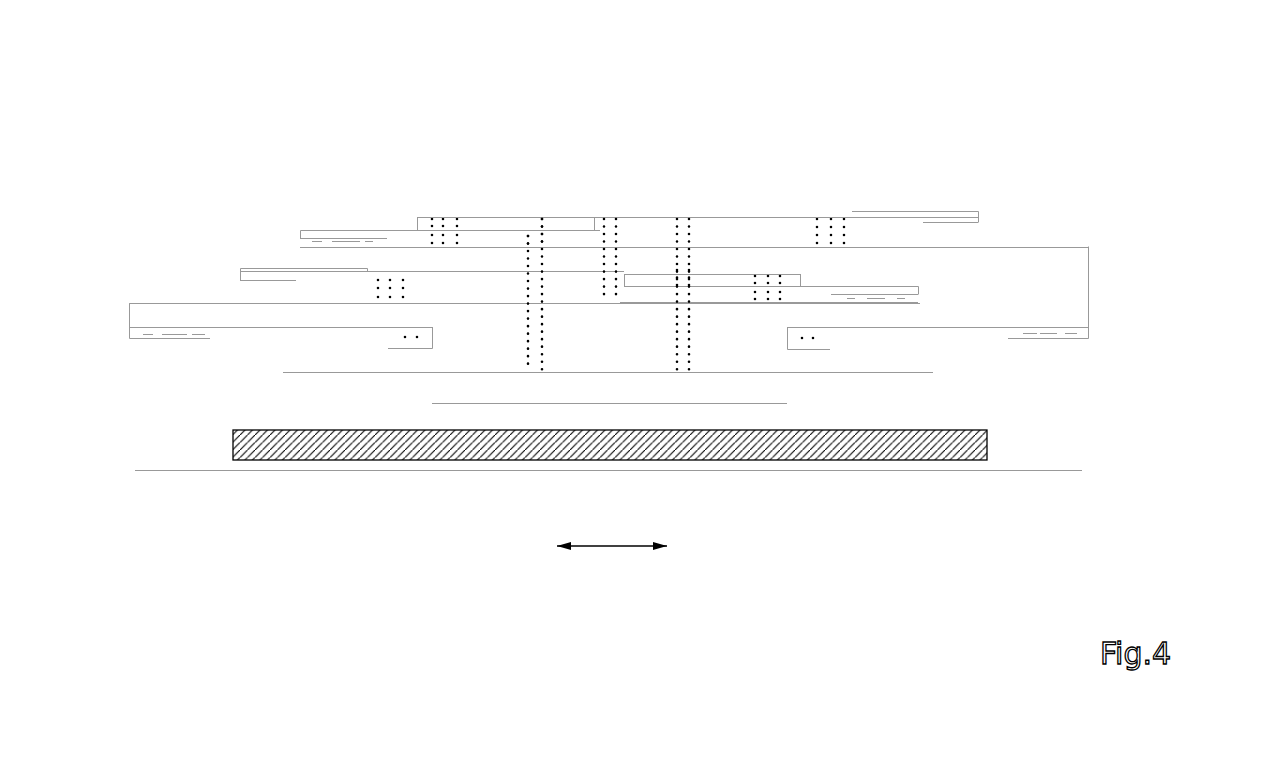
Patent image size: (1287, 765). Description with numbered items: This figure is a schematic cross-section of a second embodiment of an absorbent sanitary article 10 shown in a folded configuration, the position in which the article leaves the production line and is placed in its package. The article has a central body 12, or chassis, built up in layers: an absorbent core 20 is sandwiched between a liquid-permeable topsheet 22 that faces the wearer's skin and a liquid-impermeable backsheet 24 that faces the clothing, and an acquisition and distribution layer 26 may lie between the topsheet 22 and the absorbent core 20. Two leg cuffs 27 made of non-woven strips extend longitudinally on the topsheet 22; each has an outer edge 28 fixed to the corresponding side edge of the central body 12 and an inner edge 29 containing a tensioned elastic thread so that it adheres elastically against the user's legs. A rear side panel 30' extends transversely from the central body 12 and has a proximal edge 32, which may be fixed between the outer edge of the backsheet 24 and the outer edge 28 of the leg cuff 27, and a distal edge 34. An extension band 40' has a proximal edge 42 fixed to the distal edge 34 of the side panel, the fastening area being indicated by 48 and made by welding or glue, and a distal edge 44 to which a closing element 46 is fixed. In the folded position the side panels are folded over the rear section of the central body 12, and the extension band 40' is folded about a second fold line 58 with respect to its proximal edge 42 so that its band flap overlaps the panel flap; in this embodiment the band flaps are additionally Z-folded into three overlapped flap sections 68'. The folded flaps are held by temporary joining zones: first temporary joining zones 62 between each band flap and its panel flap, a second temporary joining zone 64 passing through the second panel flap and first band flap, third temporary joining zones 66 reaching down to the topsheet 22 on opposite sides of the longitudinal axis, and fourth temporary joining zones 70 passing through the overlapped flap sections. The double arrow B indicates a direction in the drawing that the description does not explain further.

The absorbent sanitary article 10 is at (915, 107).
The central body 12 is at (1103, 373).
The absorbent core 20 is at (795, 445).
The liquid-permeable topsheet 22 is at (825, 372).
The liquid-impermeable backsheet 24 is at (513, 470).
The acquisition and distribution layer 26 is at (610, 402).
The leg cuff 27 is at (220, 327).
The outer edge of leg cuff 28 is at (142, 327).
The inner edge of leg cuff 29 is at (433, 337).
The first rear side panel 30' is at (525, 221).
The proximal edge of side panel 32 is at (178, 338).
The distal edge of side panel 34 is at (343, 247).
The first extension band 40' is at (664, 222).
The proximal edge of extension band 42 is at (308, 238).
The distal edge of extension band 44 is at (281, 274).
The closing element 46 is at (260, 267).
The fastening area 48 is at (333, 240).
The second fold line 58 is at (300, 232).
The first temporary joining zone 62 is at (403, 280).
The second temporary joining zone 64 is at (613, 260).
The third temporary joining zone 66 is at (540, 236).
The flap section 68' is at (713, 237).
The fourth temporary joining zone 70 is at (443, 227).
The sliding direction B is at (615, 546).